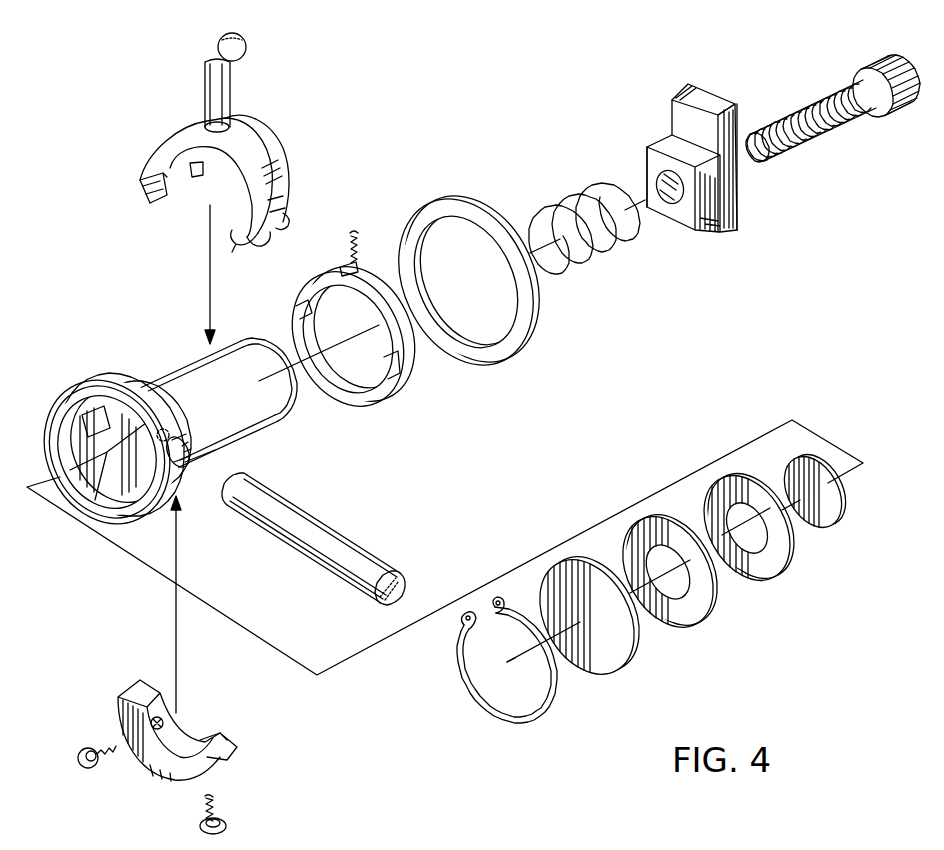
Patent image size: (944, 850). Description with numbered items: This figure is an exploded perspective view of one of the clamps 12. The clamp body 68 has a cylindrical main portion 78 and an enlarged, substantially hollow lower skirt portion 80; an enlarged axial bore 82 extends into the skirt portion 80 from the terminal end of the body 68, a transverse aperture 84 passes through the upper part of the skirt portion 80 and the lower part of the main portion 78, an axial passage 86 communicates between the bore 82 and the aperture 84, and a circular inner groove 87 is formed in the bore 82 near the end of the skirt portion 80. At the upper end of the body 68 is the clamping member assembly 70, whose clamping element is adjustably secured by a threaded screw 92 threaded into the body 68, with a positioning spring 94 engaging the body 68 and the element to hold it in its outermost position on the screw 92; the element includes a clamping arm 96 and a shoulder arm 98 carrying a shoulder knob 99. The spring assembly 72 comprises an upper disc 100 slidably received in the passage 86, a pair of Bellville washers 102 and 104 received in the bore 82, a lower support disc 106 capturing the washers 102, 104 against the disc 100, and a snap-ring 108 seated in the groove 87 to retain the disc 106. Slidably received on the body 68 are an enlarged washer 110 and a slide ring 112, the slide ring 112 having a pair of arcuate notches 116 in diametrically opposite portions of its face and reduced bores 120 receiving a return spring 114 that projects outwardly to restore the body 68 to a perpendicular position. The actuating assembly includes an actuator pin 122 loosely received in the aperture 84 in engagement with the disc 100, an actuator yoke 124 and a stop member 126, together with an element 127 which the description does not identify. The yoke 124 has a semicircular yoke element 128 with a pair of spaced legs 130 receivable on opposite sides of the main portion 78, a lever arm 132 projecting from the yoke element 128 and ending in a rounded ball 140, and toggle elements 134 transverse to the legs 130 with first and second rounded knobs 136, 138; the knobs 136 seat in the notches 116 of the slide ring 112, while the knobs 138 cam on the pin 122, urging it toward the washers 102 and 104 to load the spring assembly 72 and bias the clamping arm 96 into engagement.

The clamp 12 is at (690, 305).
The body 68 is at (182, 388).
The clamping member assembly 70 is at (746, 116).
The spring assembly 72 is at (786, 671).
The cylindrical main portion 78 is at (253, 357).
The lower skirt portion 80 is at (107, 390).
The axial bore 82 is at (103, 510).
The transverse aperture 84 is at (180, 464).
The axial passage 86 is at (105, 450).
The circular inner groove 87 is at (100, 470).
The threaded screw 92 is at (800, 110).
The positioning spring 94 is at (577, 205).
The clamping arm 96 is at (728, 234).
The shoulder arm 98 is at (730, 110).
The shoulder knob 99 is at (676, 97).
The upper disc 100 is at (815, 522).
The Bellville washer 102 is at (772, 572).
The Bellville washer 104 is at (690, 602).
The lower support disc 106 is at (620, 658).
The snap-ring 108 is at (540, 705).
The enlarged washer 110 is at (538, 310).
The slide ring 112 is at (367, 395).
The return spring 114 is at (356, 254).
The arcuate notch 116 is at (398, 380).
The reduced bore 120 is at (350, 266).
The actuator pin 122 is at (385, 567).
The actuator yoke 124 is at (260, 143).
The stop member 126 is at (153, 773).
The bracket screw 127 is at (222, 808).
The yoke element 128 is at (280, 176).
The legs 130 is at (275, 212).
The lever arm 132 is at (222, 100).
The toggle element 134 is at (266, 246).
The first rounded knob 136 is at (288, 222).
The second rounded knob 138 is at (250, 245).
The rounded ball 140 is at (245, 43).